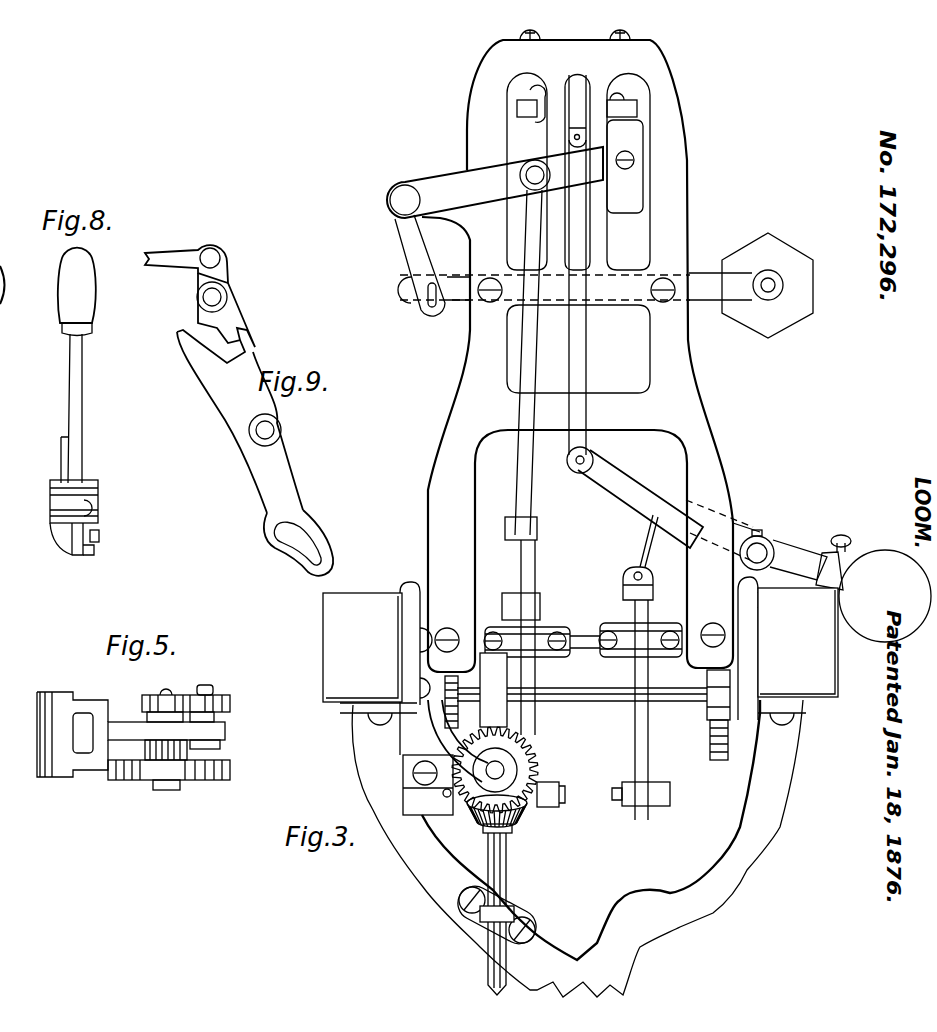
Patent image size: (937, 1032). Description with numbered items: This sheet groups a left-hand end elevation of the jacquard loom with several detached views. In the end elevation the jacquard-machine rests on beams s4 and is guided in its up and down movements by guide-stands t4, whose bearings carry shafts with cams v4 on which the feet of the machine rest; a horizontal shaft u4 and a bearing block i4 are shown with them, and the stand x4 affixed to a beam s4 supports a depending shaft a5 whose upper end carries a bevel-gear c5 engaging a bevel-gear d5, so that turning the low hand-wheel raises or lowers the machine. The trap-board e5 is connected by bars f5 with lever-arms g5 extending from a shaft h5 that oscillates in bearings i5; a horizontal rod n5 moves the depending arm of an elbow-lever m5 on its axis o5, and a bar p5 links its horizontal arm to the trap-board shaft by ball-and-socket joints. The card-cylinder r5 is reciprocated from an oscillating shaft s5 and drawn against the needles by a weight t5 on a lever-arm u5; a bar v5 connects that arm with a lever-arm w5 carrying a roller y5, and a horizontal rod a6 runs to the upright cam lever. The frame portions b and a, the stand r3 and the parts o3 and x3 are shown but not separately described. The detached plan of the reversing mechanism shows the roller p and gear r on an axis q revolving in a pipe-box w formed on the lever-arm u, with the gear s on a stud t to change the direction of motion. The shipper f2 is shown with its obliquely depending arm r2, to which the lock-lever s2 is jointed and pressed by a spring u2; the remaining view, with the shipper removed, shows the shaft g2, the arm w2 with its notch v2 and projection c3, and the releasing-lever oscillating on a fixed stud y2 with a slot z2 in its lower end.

In FIG. 3, the frame b is at (573, 377).
In FIG. 3, the card-cylinder r5 is at (751, 285).
In FIG. 3, the lever-arm u5 is at (495, 182).
In FIG. 3, the oscillating shaft s5 is at (417, 250).
In FIG. 3, the weight t5 is at (625, 166).
In FIG. 3, the trap-board e5 is at (577, 103).
In FIG. 3, the bars f5 is at (580, 274).
In FIG. 3, the bar v5 is at (548, 342).
In FIG. 3, the lever-arm w5 is at (535, 447).
In FIG. 3, the lever-arms g5 is at (665, 505).
In FIG. 3, the bar p5 is at (646, 667).
In FIG. 3, the horizontal rod n5 is at (641, 785).
In FIG. 3, the shaft h5 is at (832, 582).
In FIG. 3, the bearings i5 is at (760, 521).
In FIG. 3, the guide-stands t4 is at (580, 666).
In FIG. 3, the beams s4 is at (580, 645).
In FIG. 3, the roller y5 is at (521, 606).
In FIG. 3, the axis o5 is at (542, 638).
In FIG. 3, the elbow-lever m5 is at (640, 640).
In FIG. 3, the shaft u4 is at (582, 699).
In FIG. 3, the cam v4 is at (580, 715).
In FIG. 3, the bearing block i4 is at (493, 690).
In FIG. 3, the bearings x4 is at (445, 757).
In FIG. 3, the bevel-gear d5 is at (536, 770).
In FIG. 3, the horizontal rod a6 is at (551, 805).
In FIG. 3, the bevel-gear c5 is at (491, 817).
In FIG. 3, the depending shaft a5 is at (507, 914).
In FIG. 3, the bearing bracket r3 is at (497, 914).
In FIG. 3, the frame arm a is at (577, 848).
In FIG. 8, the loom-shipper f2 is at (77, 365).
In FIG. 8, the arm r2 is at (74, 485).
In FIG. 8, the spring u2 is at (63, 541).
In FIG. 8, the stud t is at (99, 536).
In FIG. 5, the stud t is at (205, 680).
In FIG. 8, the lock-lever s2 is at (89, 558).
In FIG. 9, the shaft g2 is at (200, 296).
In FIG. 9, the projection c3 is at (200, 320).
In FIG. 9, the arm w2 is at (231, 317).
In FIG. 9, the notch v2 is at (250, 334).
In FIG. 9, the projection o3 is at (240, 354).
In FIG. 9, the lever x3 is at (240, 421).
In FIG. 9, the fixed stud y2 is at (282, 432).
In FIG. 9, the slot z2 is at (298, 543).
In FIG. 5, the lever-arm u is at (86, 734).
In FIG. 5, the pipe-box w is at (166, 729).
In FIG. 5, the gear r is at (178, 705).
In FIG. 5, the gear s is at (240, 701).
In FIG. 5, the roller p is at (169, 760).
In FIG. 5, the axis q is at (166, 795).